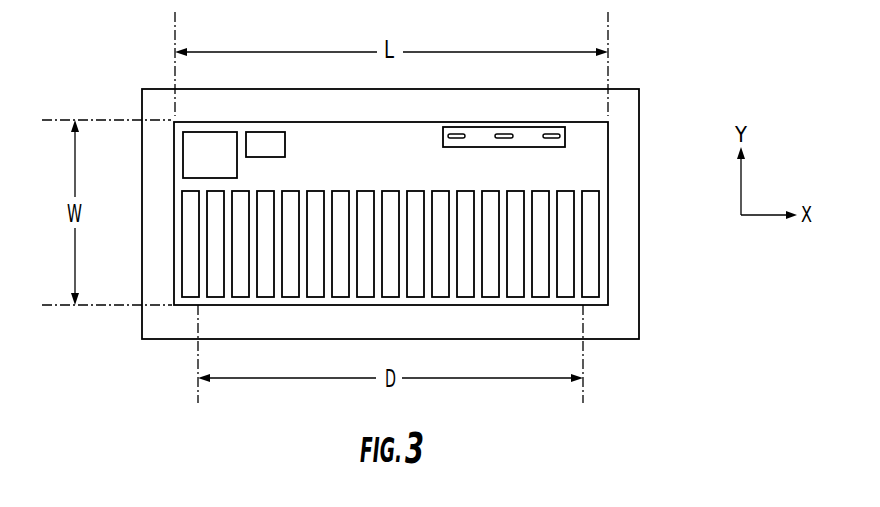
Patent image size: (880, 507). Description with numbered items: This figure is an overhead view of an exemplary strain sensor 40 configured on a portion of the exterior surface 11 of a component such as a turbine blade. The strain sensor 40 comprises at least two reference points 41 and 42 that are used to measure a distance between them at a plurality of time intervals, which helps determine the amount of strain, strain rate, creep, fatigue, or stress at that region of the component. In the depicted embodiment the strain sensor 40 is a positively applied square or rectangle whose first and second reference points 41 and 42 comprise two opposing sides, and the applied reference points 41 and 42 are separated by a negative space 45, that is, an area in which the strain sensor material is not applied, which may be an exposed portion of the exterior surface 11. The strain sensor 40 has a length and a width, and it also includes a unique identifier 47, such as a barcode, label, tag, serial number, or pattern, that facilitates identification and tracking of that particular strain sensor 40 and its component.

The strain sensor 40 is at (110, 72).
The exterior surface 11 is at (152, 107).
The first reference point 41 is at (183, 251).
The second reference point 42 is at (598, 267).
The negative space 45 is at (204, 212).
The unique identifier 47 is at (565, 133).